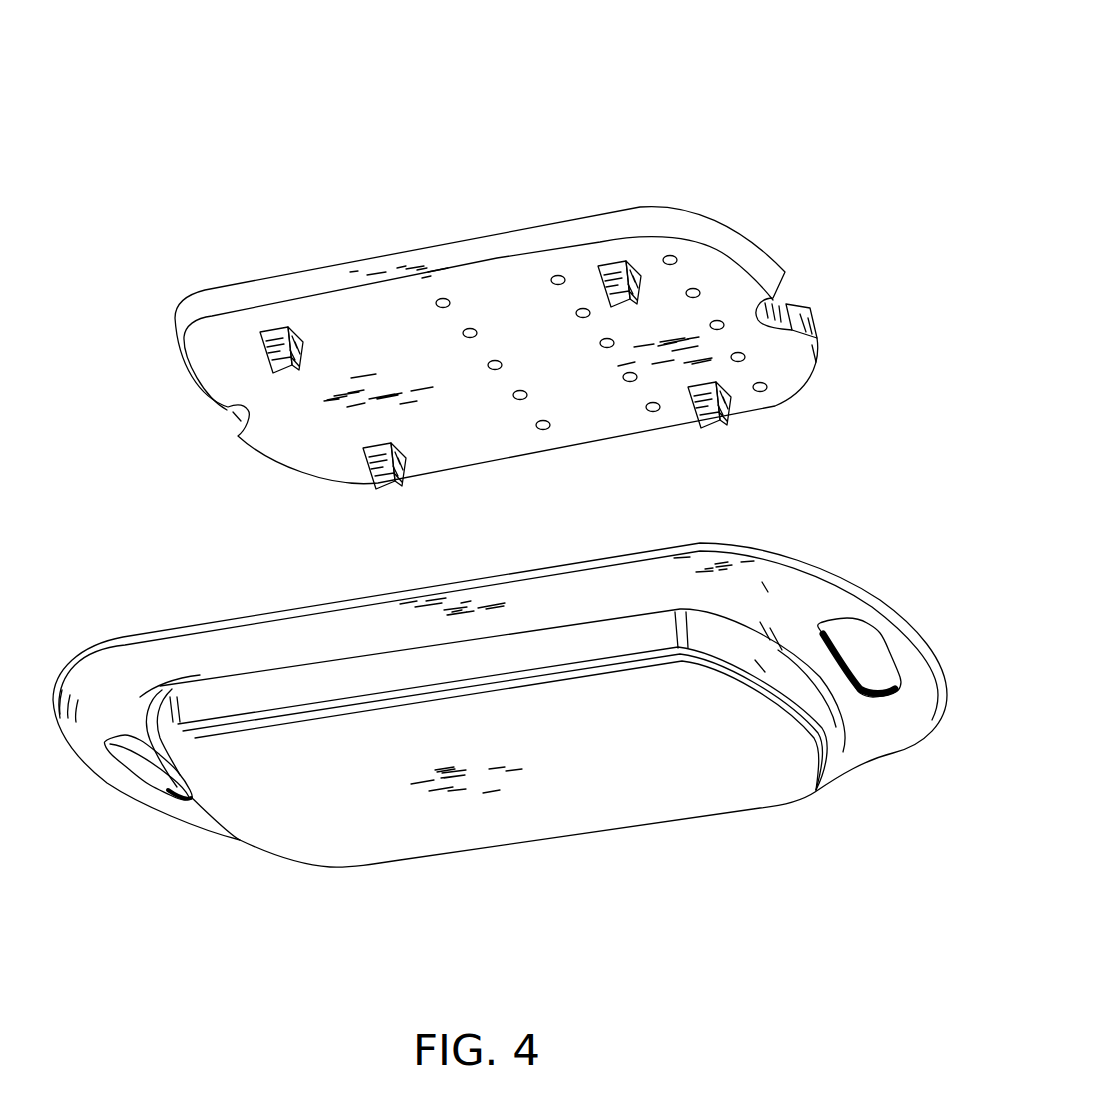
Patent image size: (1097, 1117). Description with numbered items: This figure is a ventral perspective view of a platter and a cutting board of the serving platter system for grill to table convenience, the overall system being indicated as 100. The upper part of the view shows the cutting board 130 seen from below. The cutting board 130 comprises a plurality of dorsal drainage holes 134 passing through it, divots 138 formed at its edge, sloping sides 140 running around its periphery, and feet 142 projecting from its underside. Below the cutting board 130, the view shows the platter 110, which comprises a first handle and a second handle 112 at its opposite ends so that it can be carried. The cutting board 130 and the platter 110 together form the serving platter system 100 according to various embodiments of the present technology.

The container assembly 100 is at (820, 98).
The platter 110 is at (792, 538).
The second handle 112 is at (863, 653).
The cutting board 130 is at (318, 250).
The dorsal drainage holes 134 is at (513, 393).
The divots 138 is at (787, 298).
The sloping sides 140 is at (187, 323).
The feet 142 is at (286, 376).